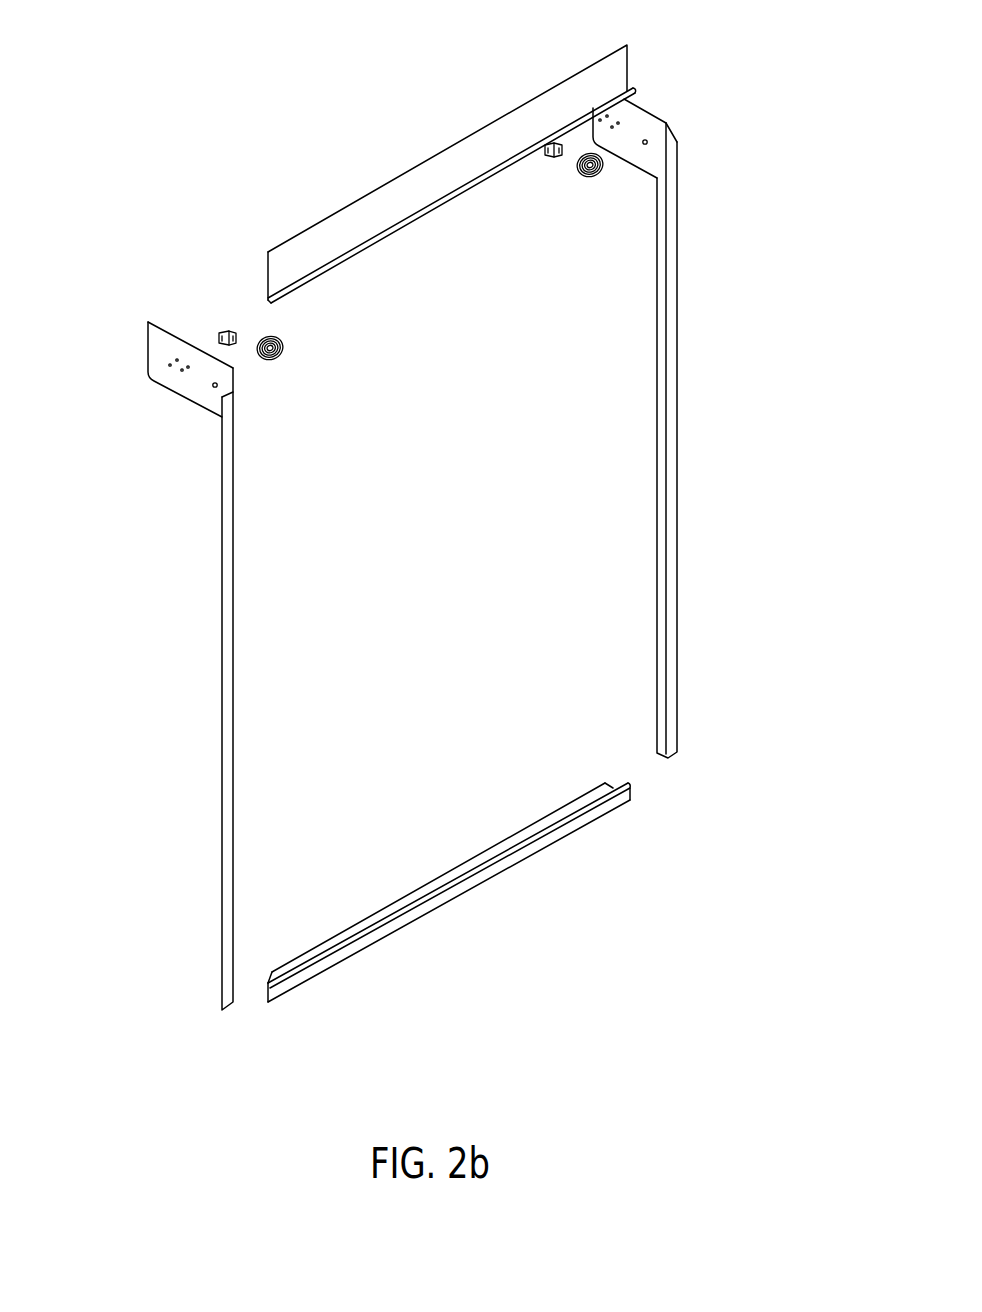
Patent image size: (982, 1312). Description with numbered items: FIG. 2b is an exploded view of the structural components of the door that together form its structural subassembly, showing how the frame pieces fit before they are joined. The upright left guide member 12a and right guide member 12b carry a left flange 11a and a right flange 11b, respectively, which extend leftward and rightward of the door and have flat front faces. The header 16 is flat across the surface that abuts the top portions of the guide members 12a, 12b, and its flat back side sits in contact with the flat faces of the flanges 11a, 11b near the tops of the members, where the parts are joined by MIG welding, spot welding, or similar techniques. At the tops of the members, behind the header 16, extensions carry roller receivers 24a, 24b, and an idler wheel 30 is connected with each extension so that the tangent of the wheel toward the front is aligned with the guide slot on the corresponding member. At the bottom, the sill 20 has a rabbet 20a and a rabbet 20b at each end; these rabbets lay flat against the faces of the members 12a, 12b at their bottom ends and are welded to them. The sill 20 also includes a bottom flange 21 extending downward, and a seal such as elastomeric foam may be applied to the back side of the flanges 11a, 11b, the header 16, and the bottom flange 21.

The header 16 is at (557, 82).
The left guide member 12a is at (146, 666).
The right guide member 12b is at (701, 428).
The left flange 11a is at (223, 888).
The right flange 11b is at (677, 610).
The sill 20 is at (476, 915).
The rabbet 20a is at (275, 988).
The rabbet 20b is at (630, 788).
The bottom flange 21 is at (473, 887).
The roller receiver 24a is at (218, 333).
The roller receiver 24b is at (552, 160).
The idler wheel 30 is at (283, 358).